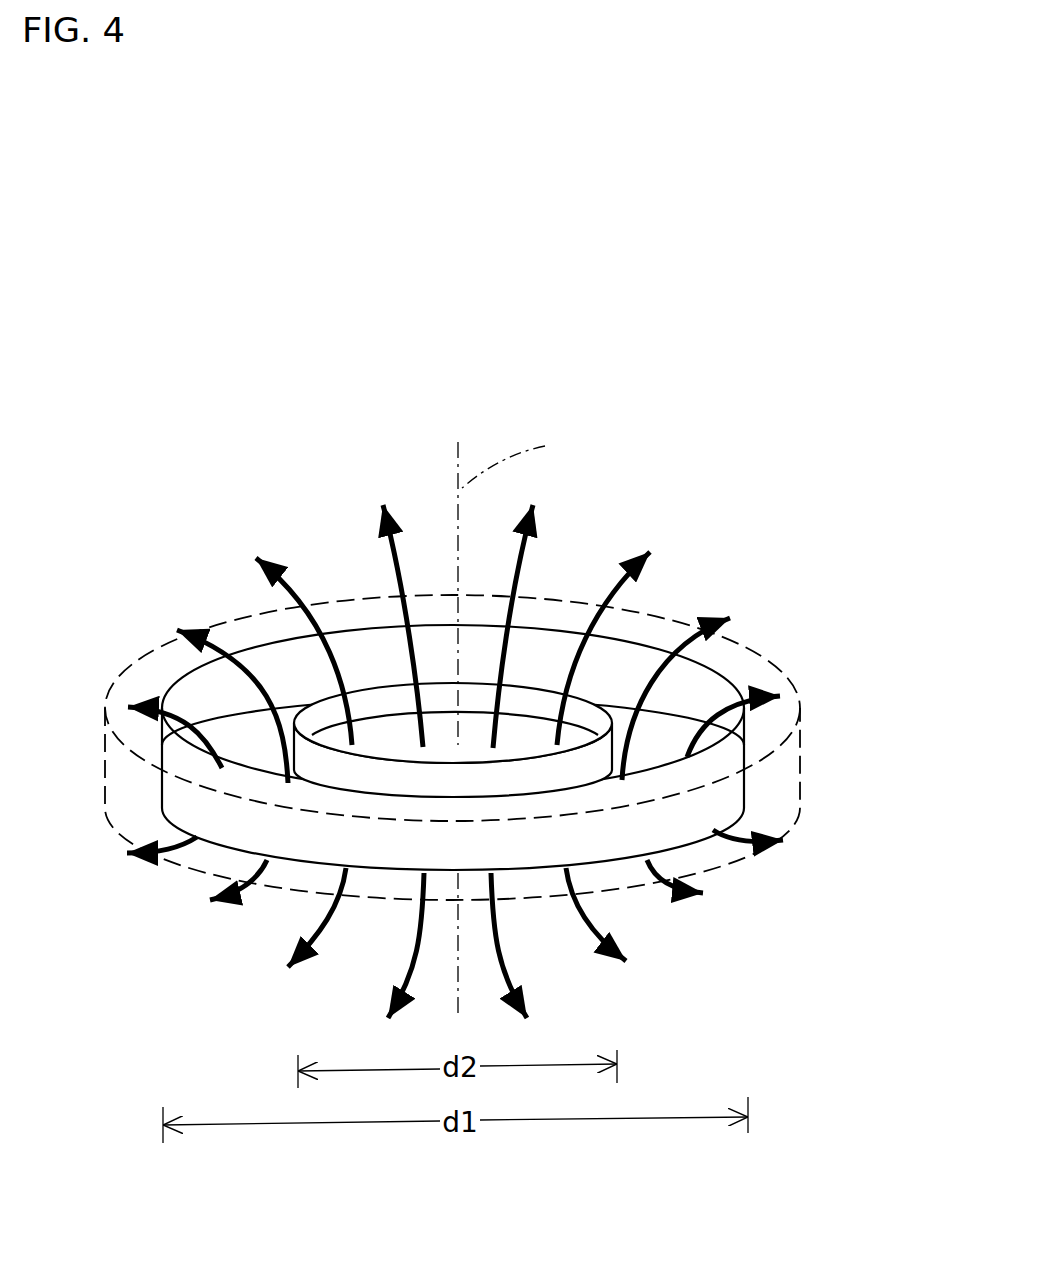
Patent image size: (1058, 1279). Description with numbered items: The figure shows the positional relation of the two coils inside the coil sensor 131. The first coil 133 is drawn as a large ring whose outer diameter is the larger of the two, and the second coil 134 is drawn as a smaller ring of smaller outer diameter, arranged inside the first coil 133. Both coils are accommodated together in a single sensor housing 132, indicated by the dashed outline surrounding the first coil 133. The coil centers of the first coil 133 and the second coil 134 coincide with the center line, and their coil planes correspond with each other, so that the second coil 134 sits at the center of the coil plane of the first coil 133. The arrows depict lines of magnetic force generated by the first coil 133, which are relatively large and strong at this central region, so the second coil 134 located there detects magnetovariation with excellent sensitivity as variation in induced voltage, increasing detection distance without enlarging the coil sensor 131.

The coil sensor 131 is at (637, 478).
The sensor housing 132 is at (780, 662).
The first coil 133 is at (748, 780).
The second coil 134 is at (607, 705).